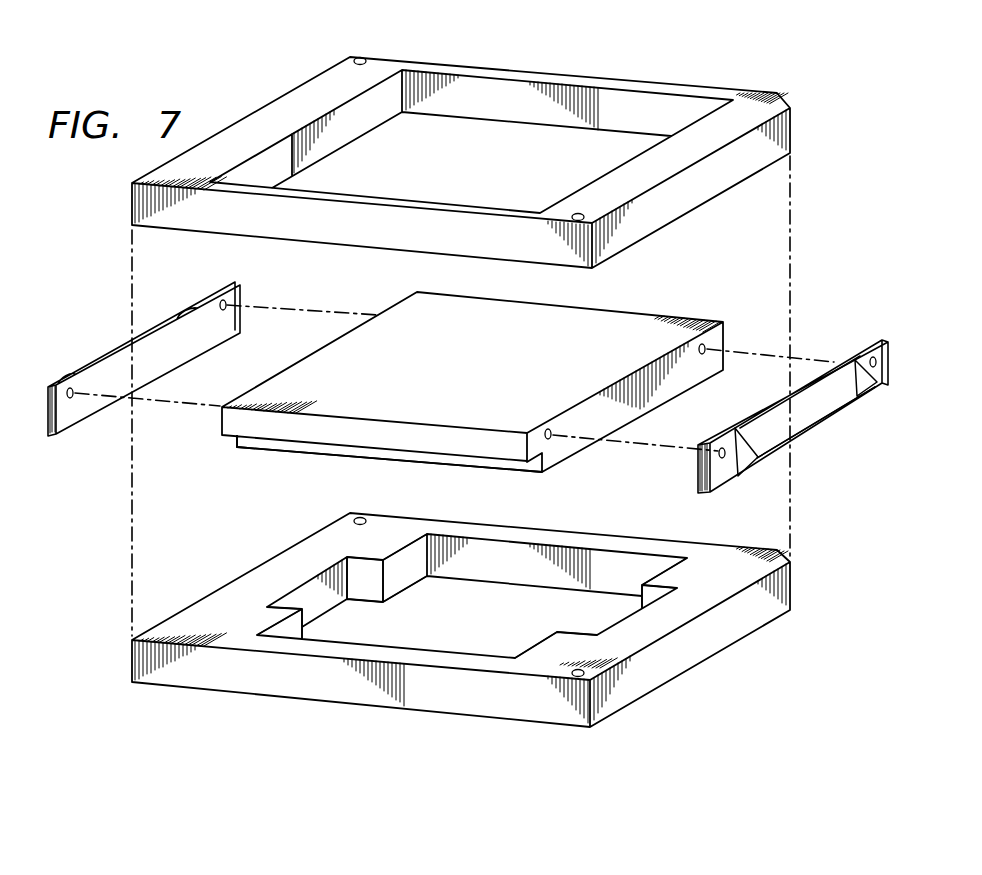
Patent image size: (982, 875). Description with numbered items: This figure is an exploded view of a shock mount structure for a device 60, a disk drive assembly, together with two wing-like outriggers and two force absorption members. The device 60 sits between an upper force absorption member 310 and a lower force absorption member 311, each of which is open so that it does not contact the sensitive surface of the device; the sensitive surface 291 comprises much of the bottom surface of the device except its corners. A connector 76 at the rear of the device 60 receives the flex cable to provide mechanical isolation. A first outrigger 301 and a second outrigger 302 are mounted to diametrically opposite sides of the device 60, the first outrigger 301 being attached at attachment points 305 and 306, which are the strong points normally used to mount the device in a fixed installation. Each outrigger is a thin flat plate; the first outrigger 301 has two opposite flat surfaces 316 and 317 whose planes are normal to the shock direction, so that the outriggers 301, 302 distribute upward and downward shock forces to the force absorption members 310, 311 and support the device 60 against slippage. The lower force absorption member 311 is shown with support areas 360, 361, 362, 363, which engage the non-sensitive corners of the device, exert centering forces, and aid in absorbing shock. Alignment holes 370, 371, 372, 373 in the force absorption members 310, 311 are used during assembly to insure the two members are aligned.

The device 60 is at (632, 311).
The connector 76 is at (297, 448).
The sensitive surface 291 is at (249, 447).
The first wing-like outrigger 301 is at (818, 428).
The second wing-like outrigger 302 is at (205, 335).
The attachment point 305 is at (546, 430).
The attachment point 306 is at (703, 356).
The force absorption member 310 is at (721, 192).
The force absorption member 311 is at (640, 542).
The outrigger surface 316 is at (815, 395).
The outrigger surface 317 is at (848, 410).
The support area 360 is at (304, 622).
The support area 361 is at (558, 632).
The support area 362 is at (386, 586).
The support area 363 is at (641, 592).
The alignment hole 370 is at (360, 57).
The alignment hole 371 is at (576, 214).
The alignment hole 372 is at (360, 517).
The alignment hole 373 is at (584, 674).